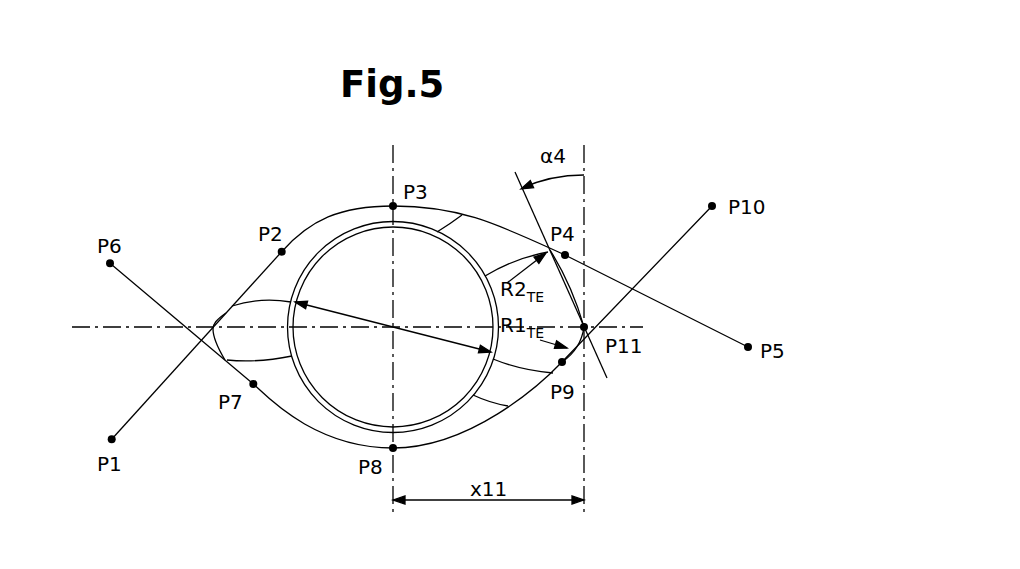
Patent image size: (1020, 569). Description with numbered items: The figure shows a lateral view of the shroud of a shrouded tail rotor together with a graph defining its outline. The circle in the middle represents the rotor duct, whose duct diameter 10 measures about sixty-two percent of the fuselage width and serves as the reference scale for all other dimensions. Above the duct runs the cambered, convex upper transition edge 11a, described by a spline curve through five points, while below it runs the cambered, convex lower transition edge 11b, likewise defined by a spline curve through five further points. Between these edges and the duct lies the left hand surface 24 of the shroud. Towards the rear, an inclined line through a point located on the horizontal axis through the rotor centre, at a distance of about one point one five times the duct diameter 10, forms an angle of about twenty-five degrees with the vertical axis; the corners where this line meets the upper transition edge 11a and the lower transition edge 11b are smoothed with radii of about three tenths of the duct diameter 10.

The duct diameter 10 is at (365, 318).
The upper transition edge 11a is at (250, 286).
The lower transition edge 11b is at (274, 401).
The left hand surface 24 is at (503, 385).